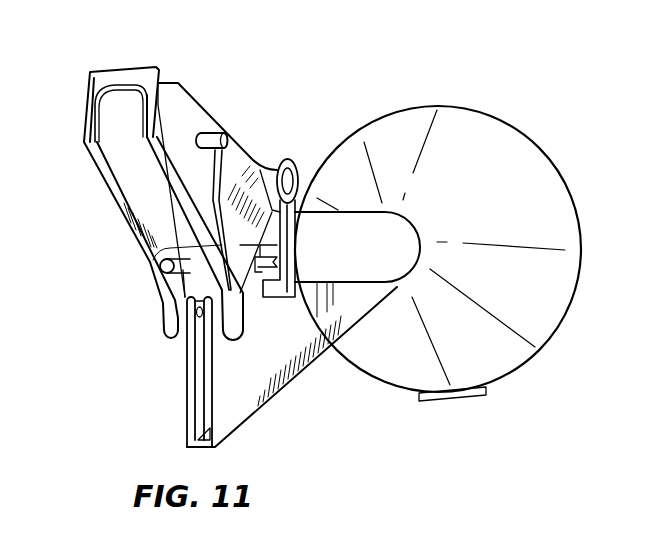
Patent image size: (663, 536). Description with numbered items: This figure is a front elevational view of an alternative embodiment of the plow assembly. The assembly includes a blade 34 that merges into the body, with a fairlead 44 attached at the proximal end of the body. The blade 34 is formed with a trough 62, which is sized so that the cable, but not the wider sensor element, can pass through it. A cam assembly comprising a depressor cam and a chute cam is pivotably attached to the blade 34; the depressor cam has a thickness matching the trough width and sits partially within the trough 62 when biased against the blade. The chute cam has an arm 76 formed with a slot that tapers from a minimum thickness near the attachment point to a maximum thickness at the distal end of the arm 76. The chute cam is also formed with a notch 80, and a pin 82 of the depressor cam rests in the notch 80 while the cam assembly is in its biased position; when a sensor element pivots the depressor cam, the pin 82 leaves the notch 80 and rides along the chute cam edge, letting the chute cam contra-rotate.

The blade 34 is at (268, 395).
The fairlead 44 is at (417, 107).
The trough 62 is at (198, 388).
The arm 76 is at (107, 195).
The notch 80 is at (157, 280).
The pin 82 is at (217, 137).